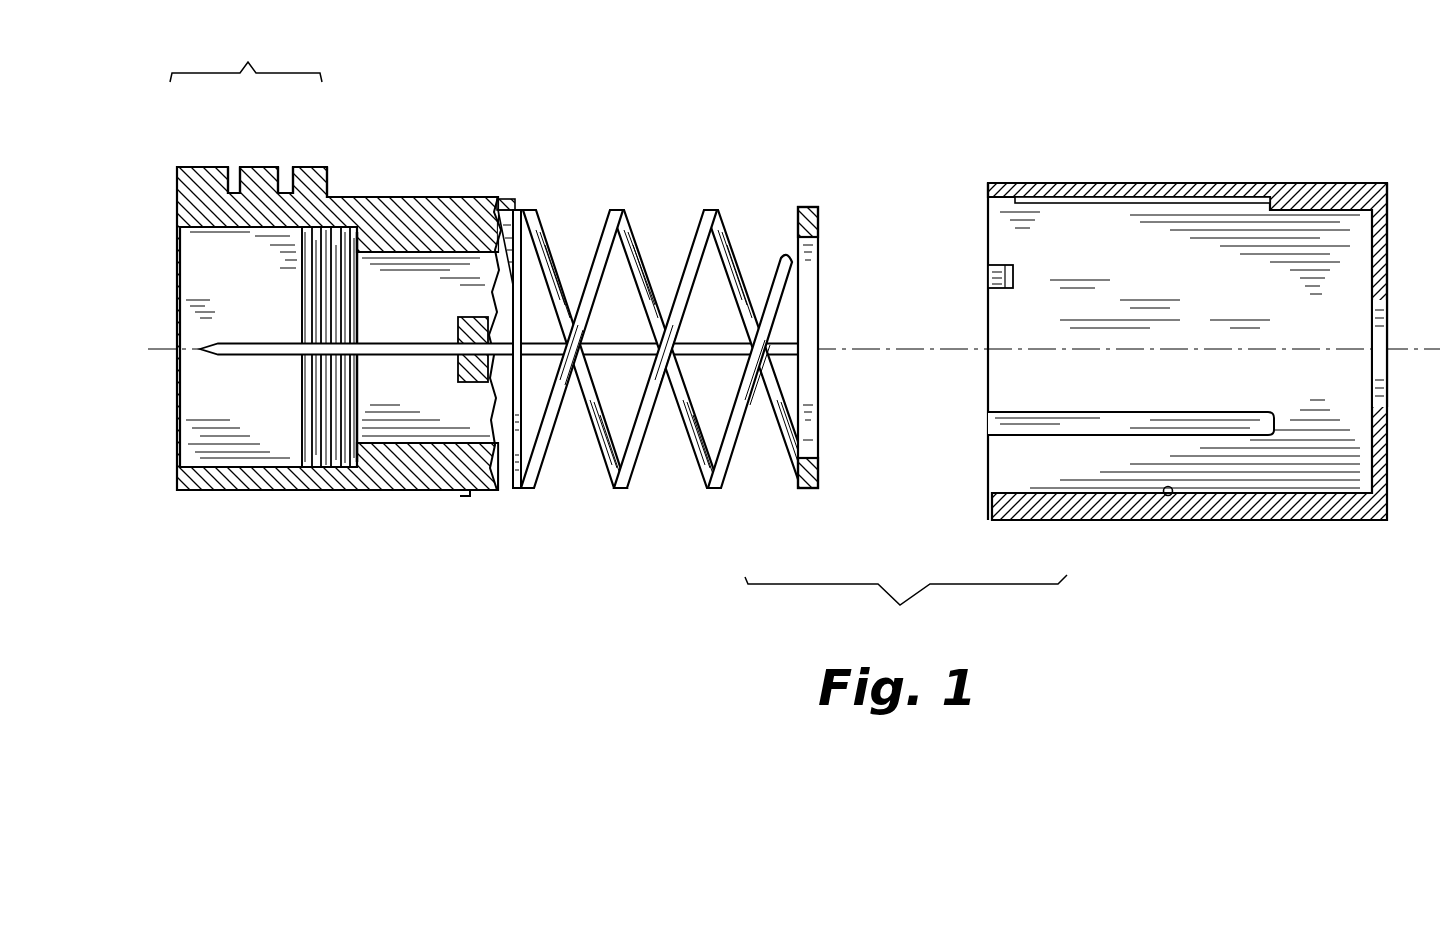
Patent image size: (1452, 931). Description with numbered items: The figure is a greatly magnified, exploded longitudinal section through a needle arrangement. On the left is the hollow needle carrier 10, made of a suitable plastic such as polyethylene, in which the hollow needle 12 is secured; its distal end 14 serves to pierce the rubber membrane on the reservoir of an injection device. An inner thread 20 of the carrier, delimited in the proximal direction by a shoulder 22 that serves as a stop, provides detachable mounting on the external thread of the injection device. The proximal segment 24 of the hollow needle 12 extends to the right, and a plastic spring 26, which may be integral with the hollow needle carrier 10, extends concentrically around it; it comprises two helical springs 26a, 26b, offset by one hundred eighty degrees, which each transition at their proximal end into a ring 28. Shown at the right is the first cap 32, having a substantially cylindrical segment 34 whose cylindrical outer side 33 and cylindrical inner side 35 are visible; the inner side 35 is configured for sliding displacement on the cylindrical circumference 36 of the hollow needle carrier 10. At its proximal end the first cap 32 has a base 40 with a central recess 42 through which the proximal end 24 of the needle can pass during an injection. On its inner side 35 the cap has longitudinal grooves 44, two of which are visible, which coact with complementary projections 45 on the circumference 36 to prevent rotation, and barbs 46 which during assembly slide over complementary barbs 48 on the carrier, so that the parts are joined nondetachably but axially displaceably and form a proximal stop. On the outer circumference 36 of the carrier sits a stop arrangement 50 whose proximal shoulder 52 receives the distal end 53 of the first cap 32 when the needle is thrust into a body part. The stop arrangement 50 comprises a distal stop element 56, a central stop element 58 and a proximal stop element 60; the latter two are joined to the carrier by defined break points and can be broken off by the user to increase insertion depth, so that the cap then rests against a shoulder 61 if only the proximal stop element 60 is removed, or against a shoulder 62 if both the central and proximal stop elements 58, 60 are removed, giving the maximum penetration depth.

The hollow needle carrier 10 is at (415, 158).
The hollow needle 12 is at (422, 332).
The distal end 14 is at (265, 345).
The inner thread 20 is at (325, 418).
The shoulder 22 is at (352, 272).
The proximal segment 24 is at (724, 343).
The plastic spring 26 is at (667, 341).
The helical spring 26a is at (628, 489).
The helical spring 26b is at (720, 489).
The ring 28 is at (818, 212).
The first cap 32 is at (1256, 176).
The cylindrical outer side 33 is at (1280, 522).
The cylindrical segment 34 is at (1194, 522).
The cylindrical inner side 35 is at (1164, 496).
The circumference 36 is at (527, 200).
The base 40 is at (1389, 240).
The recess 42 is at (1389, 308).
The longitudinal grooves 44 is at (1005, 205).
The projections 45 is at (514, 185).
The barbs 46 is at (1018, 268).
The barbs 48 is at (462, 492).
The stop arrangement 50 is at (270, 42).
The proximal shoulder 52 is at (330, 174).
The distal end 53 is at (987, 194).
The distal stop element 56 is at (188, 165).
The central stop element 58 is at (262, 166).
The proximal stop element 60 is at (311, 166).
The shoulder 61 is at (284, 166).
The shoulder 62 is at (232, 166).